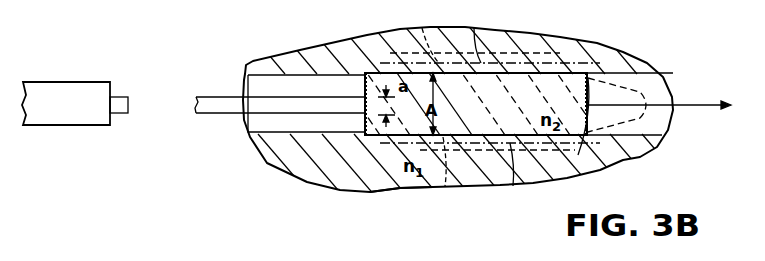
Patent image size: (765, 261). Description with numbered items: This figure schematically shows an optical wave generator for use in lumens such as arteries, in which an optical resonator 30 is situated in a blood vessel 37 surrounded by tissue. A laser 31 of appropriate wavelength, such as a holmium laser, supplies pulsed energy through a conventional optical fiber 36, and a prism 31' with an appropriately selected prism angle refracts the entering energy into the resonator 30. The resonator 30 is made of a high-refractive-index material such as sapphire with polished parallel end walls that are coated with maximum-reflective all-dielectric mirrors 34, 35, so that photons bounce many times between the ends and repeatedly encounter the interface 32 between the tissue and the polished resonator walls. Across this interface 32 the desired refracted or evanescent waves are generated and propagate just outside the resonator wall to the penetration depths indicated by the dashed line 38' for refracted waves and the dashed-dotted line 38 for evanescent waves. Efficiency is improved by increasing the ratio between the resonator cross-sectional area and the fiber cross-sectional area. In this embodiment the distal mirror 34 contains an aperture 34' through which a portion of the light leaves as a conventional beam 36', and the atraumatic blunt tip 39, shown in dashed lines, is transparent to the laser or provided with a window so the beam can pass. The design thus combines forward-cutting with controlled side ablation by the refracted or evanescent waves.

The optical resonator 30 is at (550, 66).
The laser 31 is at (75, 121).
The prism 31' is at (306, 79).
The interface 32 is at (478, 148).
The distal mirror 34 is at (598, 137).
The aperture 34' is at (468, 104).
The mirror 35 is at (360, 135).
The optical fiber 36 is at (280, 119).
The conventional beam 36' is at (653, 110).
The blood vessel 37 is at (391, 186).
The evanescent wave penetration depth 38 is at (498, 107).
The refracted wave penetration depth 38' is at (435, 108).
The blunt tip 39 is at (673, 82).